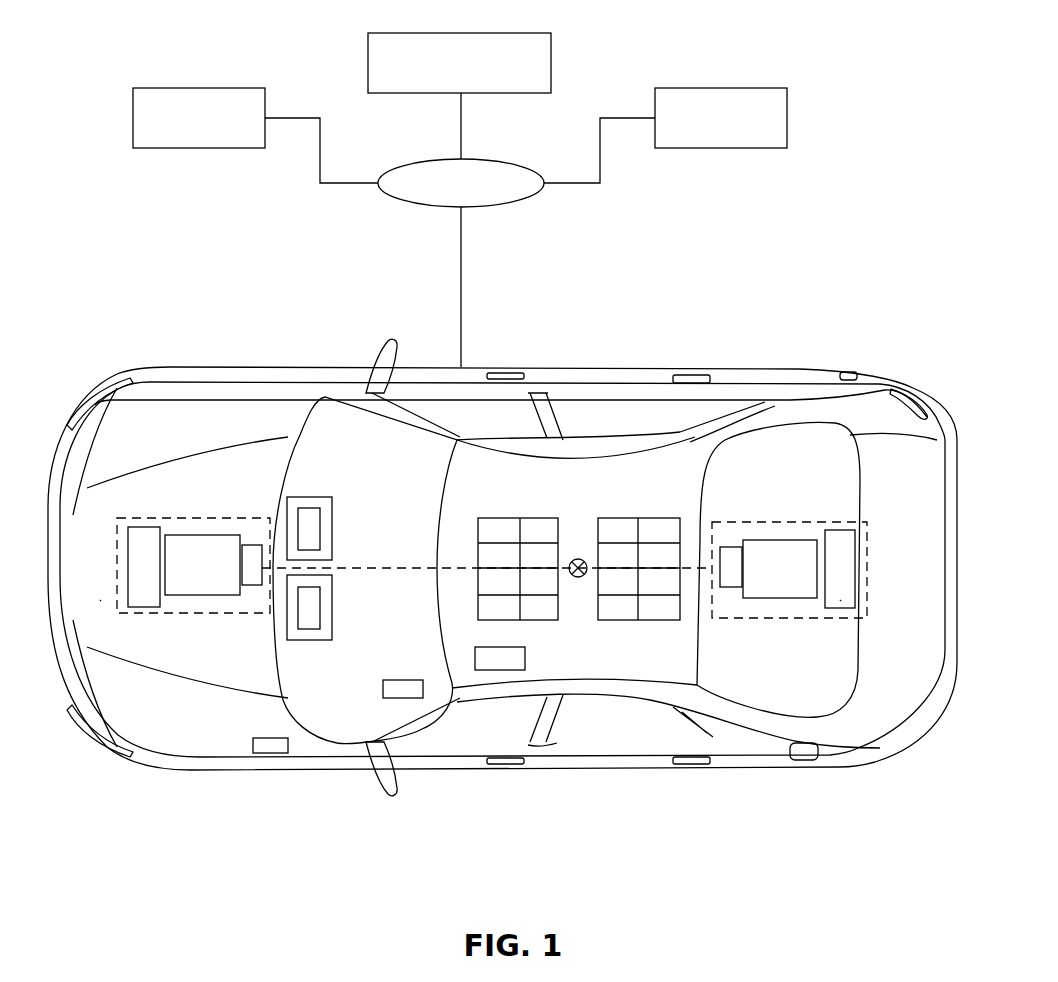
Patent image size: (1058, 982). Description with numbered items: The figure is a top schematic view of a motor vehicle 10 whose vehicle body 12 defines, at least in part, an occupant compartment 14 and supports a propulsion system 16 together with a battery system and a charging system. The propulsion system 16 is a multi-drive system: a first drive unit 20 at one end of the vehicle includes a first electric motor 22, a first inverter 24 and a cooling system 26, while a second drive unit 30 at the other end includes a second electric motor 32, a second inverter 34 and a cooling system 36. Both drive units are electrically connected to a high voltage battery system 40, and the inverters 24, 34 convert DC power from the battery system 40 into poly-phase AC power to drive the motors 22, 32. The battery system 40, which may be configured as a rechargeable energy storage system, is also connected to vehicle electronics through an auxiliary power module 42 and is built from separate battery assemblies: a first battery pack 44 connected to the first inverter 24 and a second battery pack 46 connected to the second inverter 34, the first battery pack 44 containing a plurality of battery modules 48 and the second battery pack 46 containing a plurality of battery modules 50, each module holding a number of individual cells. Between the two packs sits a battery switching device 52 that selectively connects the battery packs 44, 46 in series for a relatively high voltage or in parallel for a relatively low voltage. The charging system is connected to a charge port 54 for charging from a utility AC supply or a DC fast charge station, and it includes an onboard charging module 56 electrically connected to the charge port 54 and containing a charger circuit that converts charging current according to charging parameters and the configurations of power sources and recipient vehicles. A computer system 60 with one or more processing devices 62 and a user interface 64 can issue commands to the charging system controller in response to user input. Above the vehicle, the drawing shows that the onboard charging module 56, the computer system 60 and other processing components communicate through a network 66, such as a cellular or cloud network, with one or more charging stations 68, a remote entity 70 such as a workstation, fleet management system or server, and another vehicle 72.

The motor vehicle 10 is at (110, 284).
The vehicle body 12 is at (552, 360).
The occupant compartment 14 is at (620, 688).
The propulsion system 16 is at (212, 672).
The first drive unit 20 is at (197, 517).
The first electric motor 22 is at (220, 533).
The first inverter 24 is at (252, 585).
The cooling system 26 is at (152, 610).
The second drive unit 30 is at (823, 522).
The second electric motor 32 is at (790, 550).
The second inverter 34 is at (738, 608).
The cooling system 36 is at (857, 617).
The high voltage battery system 40 is at (674, 494).
The auxiliary power module 42 is at (488, 663).
The first battery pack 44 is at (535, 620).
The second battery pack 46 is at (615, 620).
The battery modules 48 is at (535, 537).
The battery modules 50 is at (607, 532).
The battery switching device 52 is at (573, 559).
The charge port 54 is at (268, 750).
The onboard charging module 56 is at (385, 693).
The computer system 60 is at (322, 472).
The processing devices 62 is at (320, 593).
The user interface 64 is at (318, 528).
The network 66 is at (446, 197).
The charging stations 68 is at (186, 88).
The remote entity 70 is at (493, 33).
The another vehicle 72 is at (722, 88).